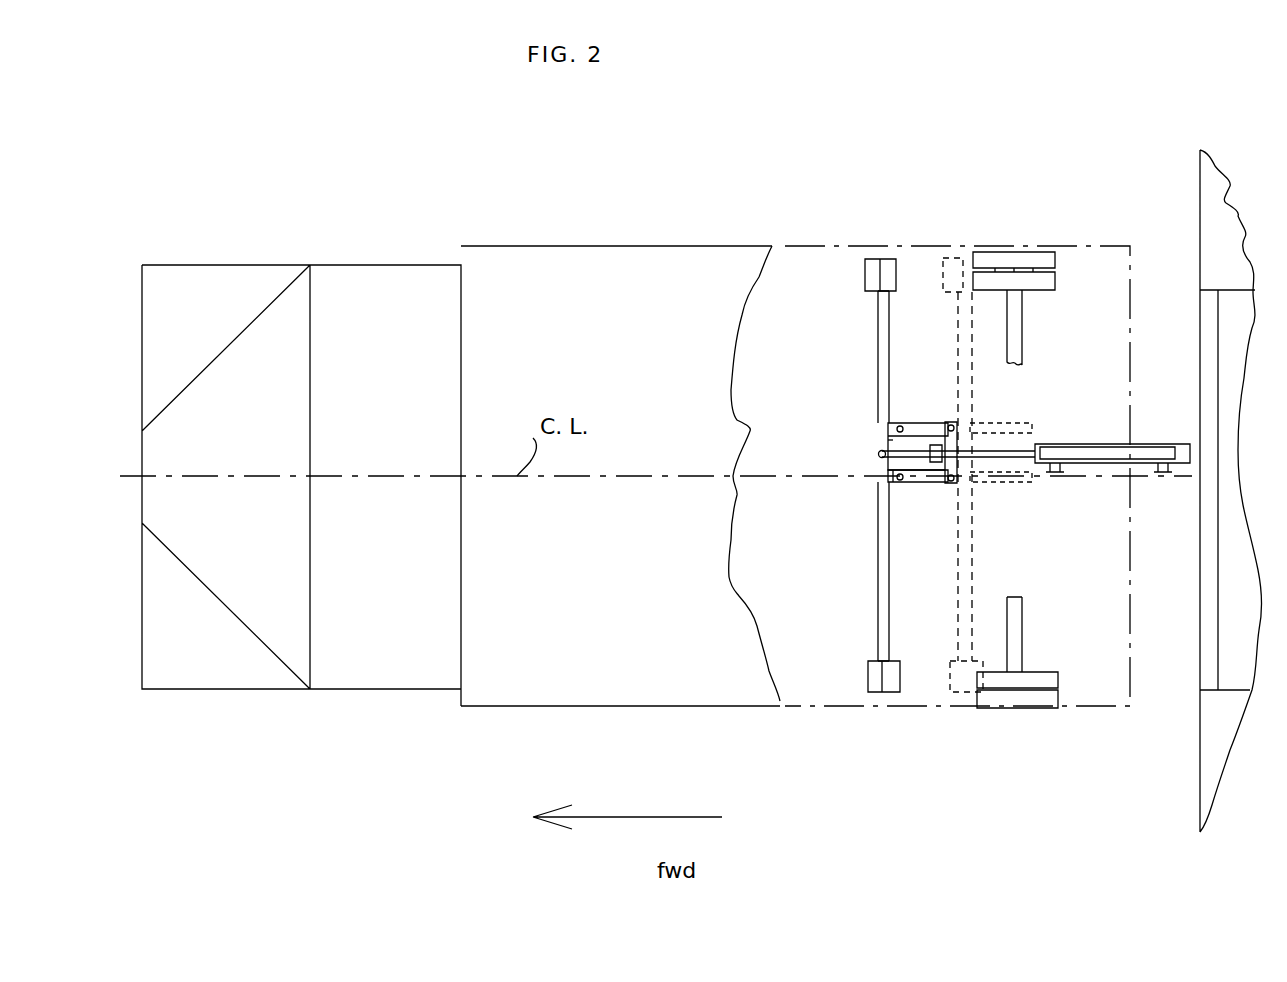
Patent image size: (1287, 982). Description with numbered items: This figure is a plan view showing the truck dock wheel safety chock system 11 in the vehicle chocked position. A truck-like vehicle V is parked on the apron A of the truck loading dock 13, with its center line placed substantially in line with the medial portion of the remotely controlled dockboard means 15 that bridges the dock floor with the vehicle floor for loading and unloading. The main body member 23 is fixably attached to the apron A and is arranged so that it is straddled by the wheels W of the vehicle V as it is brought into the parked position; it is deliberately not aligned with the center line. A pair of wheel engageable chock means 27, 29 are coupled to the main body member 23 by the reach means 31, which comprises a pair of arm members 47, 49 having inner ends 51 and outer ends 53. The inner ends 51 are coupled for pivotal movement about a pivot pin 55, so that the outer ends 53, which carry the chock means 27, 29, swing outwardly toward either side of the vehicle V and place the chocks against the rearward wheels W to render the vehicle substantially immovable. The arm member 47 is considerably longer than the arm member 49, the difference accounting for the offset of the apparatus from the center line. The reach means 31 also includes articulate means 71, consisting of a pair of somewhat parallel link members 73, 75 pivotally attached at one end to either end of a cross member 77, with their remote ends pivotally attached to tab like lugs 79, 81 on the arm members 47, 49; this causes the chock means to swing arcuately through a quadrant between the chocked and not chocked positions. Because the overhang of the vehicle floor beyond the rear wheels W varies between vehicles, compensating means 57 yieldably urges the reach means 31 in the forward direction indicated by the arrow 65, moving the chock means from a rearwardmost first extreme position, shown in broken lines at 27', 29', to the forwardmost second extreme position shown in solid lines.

The truck dock wheel safety chock system 11 is at (1122, 201).
The truck loading dock 13 is at (1215, 238).
The remotely controlled dockboard means 15 is at (1258, 641).
The main body member 23 is at (1079, 444).
The wheel engageable chock means 27 is at (856, 709).
The wheel engageable chock means in first extreme position 27' is at (941, 709).
The wheel engageable chock means 29 is at (846, 275).
The wheel engageable chock means in first extreme position 29' is at (928, 222).
The reach means 31 is at (1021, 525).
The arm member 47 is at (878, 590).
The arm member 49 is at (878, 354).
The inner ends 51 is at (896, 432).
The outer ends 53 is at (880, 294).
The pivot pin 55 is at (878, 455).
The compensating means 57 is at (941, 780).
The arrow 65 is at (612, 820).
The articulate means 71 is at (925, 318).
The link member 73 is at (918, 430).
The link member 75 is at (925, 482).
The cross member 77 is at (973, 426).
The tab like lug 79 is at (897, 425).
The tab like lug 81 is at (893, 482).
The truck-like vehicle V is at (513, 261).
The wheels W is at (1055, 262).
The apron A is at (973, 197).